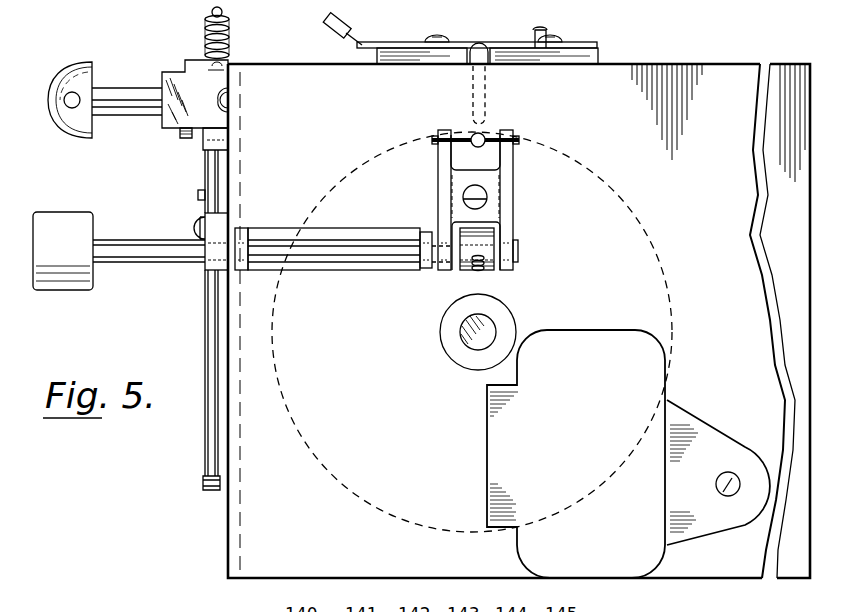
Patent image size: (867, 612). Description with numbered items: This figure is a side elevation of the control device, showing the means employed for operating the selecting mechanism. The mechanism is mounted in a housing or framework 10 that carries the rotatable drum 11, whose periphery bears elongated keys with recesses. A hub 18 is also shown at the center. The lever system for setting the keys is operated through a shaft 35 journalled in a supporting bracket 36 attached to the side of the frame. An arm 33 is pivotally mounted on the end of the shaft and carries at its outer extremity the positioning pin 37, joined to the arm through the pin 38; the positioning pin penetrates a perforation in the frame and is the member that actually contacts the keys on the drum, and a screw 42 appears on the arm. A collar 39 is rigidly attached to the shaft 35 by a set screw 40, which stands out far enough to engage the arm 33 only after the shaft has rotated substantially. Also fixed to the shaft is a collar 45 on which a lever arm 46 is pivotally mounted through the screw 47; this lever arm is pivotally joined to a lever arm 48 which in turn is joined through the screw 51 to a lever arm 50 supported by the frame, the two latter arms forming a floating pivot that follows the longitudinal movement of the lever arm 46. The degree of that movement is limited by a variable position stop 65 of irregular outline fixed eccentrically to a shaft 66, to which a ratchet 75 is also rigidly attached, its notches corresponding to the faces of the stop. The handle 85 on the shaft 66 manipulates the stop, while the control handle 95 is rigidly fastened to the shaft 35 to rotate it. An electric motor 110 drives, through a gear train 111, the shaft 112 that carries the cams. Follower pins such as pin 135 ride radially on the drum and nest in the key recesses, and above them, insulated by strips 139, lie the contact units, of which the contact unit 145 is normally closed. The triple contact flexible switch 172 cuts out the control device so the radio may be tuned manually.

The housing or framework 10 is at (666, 67).
The drum 11 is at (650, 200).
The hub 18 is at (443, 334).
The arm 33 is at (505, 180).
The shaft 35 is at (356, 230).
The supporting bracket 36 is at (270, 228).
The positioning pin 37 is at (472, 135).
The pin 38 is at (492, 136).
The collar 39 is at (500, 272).
The set screw 40 is at (476, 271).
The screw 42 is at (487, 200).
The collar 45 is at (207, 268).
The lever arm 46 is at (200, 195).
The screw 47 is at (192, 222).
The lever arm 48 is at (207, 332).
The lever arm 50 is at (215, 355).
The screw 51 is at (205, 478).
The variable position stop 65 is at (205, 140).
The shaft 66 is at (120, 92).
The ratchet 75 is at (178, 132).
The handle 85 is at (92, 137).
The control handle 95 is at (92, 290).
The electric motor 110 is at (658, 373).
The gear train 111 is at (705, 428).
The shaft 112 is at (726, 492).
The follower pin 135 is at (496, 101).
The insulating strip 139 is at (362, 47).
The contact unit 145 is at (535, 40).
The triple contact flexible switch 172 is at (238, 33).